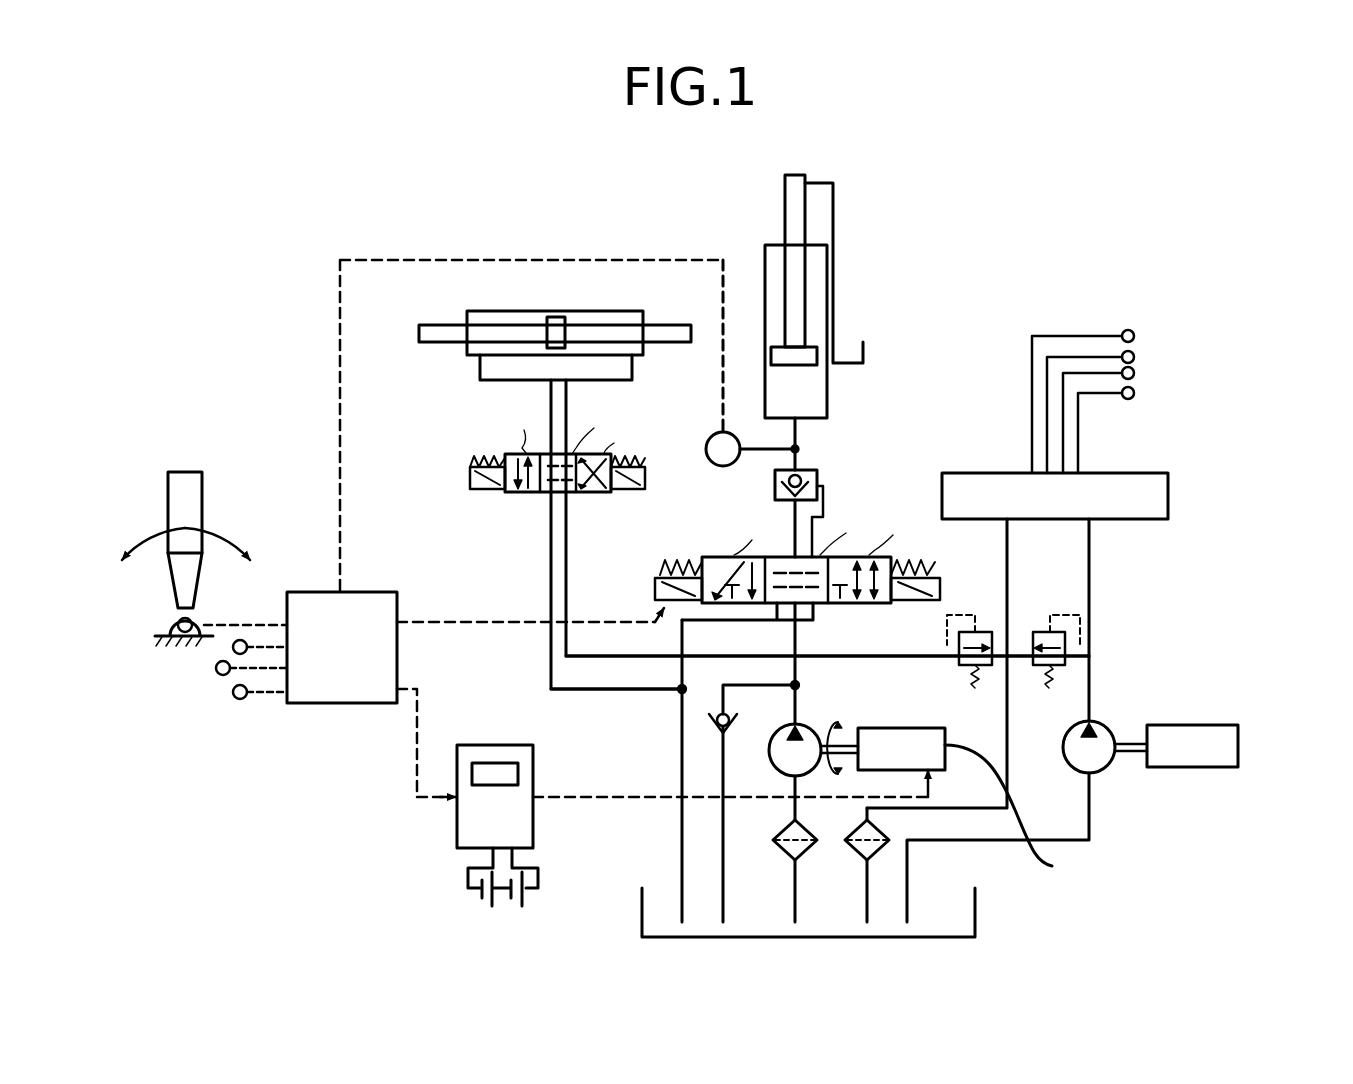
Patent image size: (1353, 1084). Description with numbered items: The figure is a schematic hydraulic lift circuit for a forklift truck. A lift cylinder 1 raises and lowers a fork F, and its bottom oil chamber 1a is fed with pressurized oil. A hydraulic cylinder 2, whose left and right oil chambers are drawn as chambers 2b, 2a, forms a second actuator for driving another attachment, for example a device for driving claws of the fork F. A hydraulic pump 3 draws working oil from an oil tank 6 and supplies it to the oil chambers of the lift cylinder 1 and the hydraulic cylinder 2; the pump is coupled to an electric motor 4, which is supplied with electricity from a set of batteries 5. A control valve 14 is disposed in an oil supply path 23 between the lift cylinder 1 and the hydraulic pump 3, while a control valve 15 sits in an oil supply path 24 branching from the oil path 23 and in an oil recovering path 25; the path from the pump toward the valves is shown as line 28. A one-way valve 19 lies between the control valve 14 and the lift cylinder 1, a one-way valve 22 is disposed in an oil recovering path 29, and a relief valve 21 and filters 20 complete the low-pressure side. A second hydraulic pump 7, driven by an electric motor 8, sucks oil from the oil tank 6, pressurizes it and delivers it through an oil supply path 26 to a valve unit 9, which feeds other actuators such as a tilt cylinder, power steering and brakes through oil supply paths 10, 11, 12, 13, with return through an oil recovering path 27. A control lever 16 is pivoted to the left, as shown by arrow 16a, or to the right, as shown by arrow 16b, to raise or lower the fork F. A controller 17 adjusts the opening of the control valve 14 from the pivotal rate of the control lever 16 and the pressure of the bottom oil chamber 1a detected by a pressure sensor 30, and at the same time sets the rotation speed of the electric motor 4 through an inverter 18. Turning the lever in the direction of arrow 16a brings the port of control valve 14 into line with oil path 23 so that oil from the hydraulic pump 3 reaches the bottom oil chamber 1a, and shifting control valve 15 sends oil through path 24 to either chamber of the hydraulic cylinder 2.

The lift cylinder 1 is at (760, 245).
The bottom oil chamber 1a is at (827, 385).
The fork F is at (834, 298).
The hydraulic cylinder 2 is at (754, 451).
The cylinder chamber 2a is at (616, 307).
The cylinder chamber 2b is at (508, 307).
The hydraulic pump 3 is at (769, 756).
The electric motor 4 is at (967, 807).
The set of batteries 5 is at (478, 908).
The oil tank 6 is at (975, 920).
The second hydraulic pump 7 is at (1096, 722).
The electric motor 8 is at (1238, 747).
The valve unit 9 is at (1168, 490).
The oil supply path 10 is at (1134, 333).
The oil supply path 11 is at (1134, 355).
The oil supply path 12 is at (1134, 373).
The oil supply path 13 is at (1134, 395).
The control valve 14 is at (697, 556).
The control valve 15 is at (467, 454).
The control lever 16 is at (195, 512).
The arrow 16a is at (152, 528).
The arrow 16b is at (223, 534).
The controller 17 is at (305, 705).
The inverter 18 is at (457, 825).
The one-way valve 19 is at (817, 478).
The filter 20 is at (785, 850).
The relief valve 21 is at (1068, 638).
The one-way valve 22 is at (728, 717).
The oil supply path 23 is at (800, 672).
The oil supply path 24 is at (600, 657).
The oil recovering path 25 is at (585, 690).
The oil supply path 26 is at (1092, 562).
The oil recovering path 27 is at (1010, 562).
The hydraulic line 28 is at (686, 672).
The oil recovering path 29 is at (720, 840).
The pressure sensor 30 is at (706, 443).